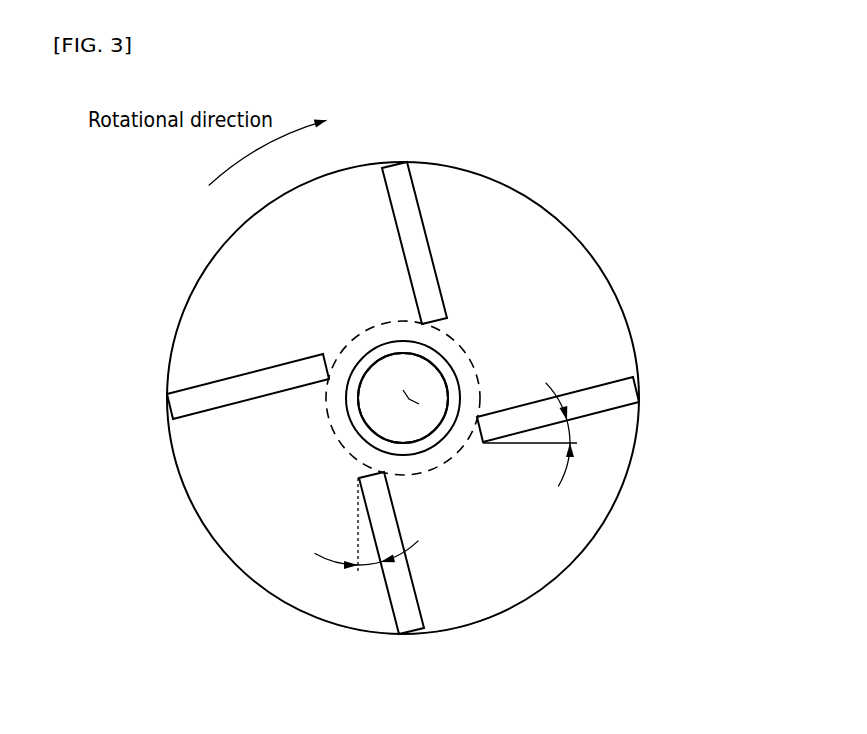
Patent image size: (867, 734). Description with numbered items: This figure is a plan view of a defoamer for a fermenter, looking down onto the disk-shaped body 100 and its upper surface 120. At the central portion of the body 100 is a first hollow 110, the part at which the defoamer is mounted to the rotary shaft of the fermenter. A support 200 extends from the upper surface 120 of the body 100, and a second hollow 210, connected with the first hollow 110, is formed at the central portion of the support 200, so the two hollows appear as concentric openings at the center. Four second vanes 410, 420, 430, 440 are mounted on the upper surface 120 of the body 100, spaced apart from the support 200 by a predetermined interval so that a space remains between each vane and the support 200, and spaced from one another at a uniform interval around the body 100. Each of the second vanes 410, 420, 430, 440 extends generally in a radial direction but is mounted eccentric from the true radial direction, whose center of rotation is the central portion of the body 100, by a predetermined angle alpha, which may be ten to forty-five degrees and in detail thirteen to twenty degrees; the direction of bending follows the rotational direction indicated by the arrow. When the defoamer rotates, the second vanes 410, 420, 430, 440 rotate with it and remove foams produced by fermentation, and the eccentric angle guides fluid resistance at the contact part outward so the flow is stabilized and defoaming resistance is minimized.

The body 100 is at (160, 233).
The upper surface 120 is at (559, 243).
The support 200 is at (460, 437).
The first hollow 110 is at (413, 395).
The second hollow 210 is at (403, 398).
The second vane 410 is at (394, 165).
The second vane 420 is at (634, 391).
The second vane 430 is at (413, 637).
The second vane 440 is at (175, 402).